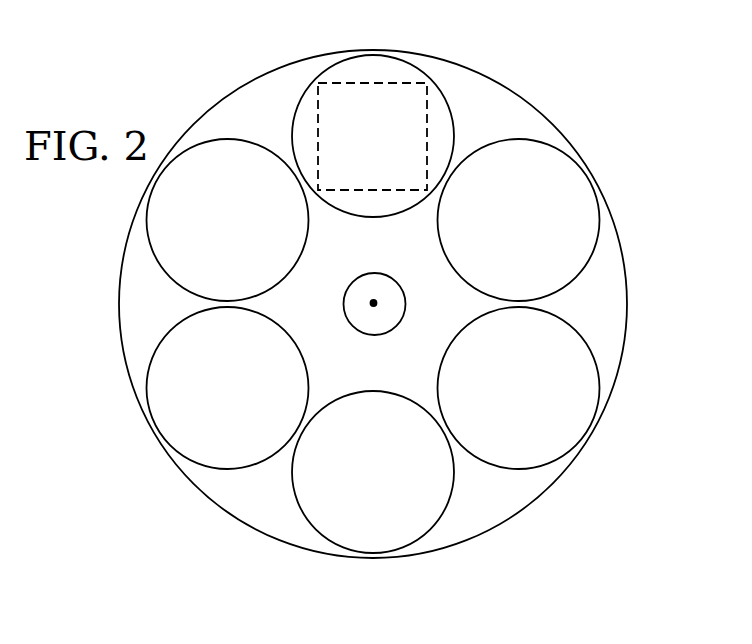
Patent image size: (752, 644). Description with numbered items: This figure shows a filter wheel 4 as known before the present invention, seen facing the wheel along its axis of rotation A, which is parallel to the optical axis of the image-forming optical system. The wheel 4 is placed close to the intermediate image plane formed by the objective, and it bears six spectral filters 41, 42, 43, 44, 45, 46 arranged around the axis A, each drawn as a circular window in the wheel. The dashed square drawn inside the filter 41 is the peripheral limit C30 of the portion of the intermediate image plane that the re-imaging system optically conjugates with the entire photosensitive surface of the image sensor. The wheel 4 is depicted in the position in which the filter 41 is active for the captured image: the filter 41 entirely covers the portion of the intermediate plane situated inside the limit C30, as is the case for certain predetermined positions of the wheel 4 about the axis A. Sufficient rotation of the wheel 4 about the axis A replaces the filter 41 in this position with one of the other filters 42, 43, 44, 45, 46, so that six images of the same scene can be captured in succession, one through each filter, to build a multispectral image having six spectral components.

The filter wheel 4 is at (632, 108).
The spectral filter 41 is at (441, 90).
The spectral filter 42 is at (226, 139).
The spectral filter 43 is at (155, 352).
The spectral filter 44 is at (303, 513).
The spectral filter 45 is at (518, 469).
The spectral filter 46 is at (590, 259).
The peripheral limit of the portion of the intermediate image plane C30 is at (317, 121).
The axis of rotation of the filter wheel A is at (376, 300).